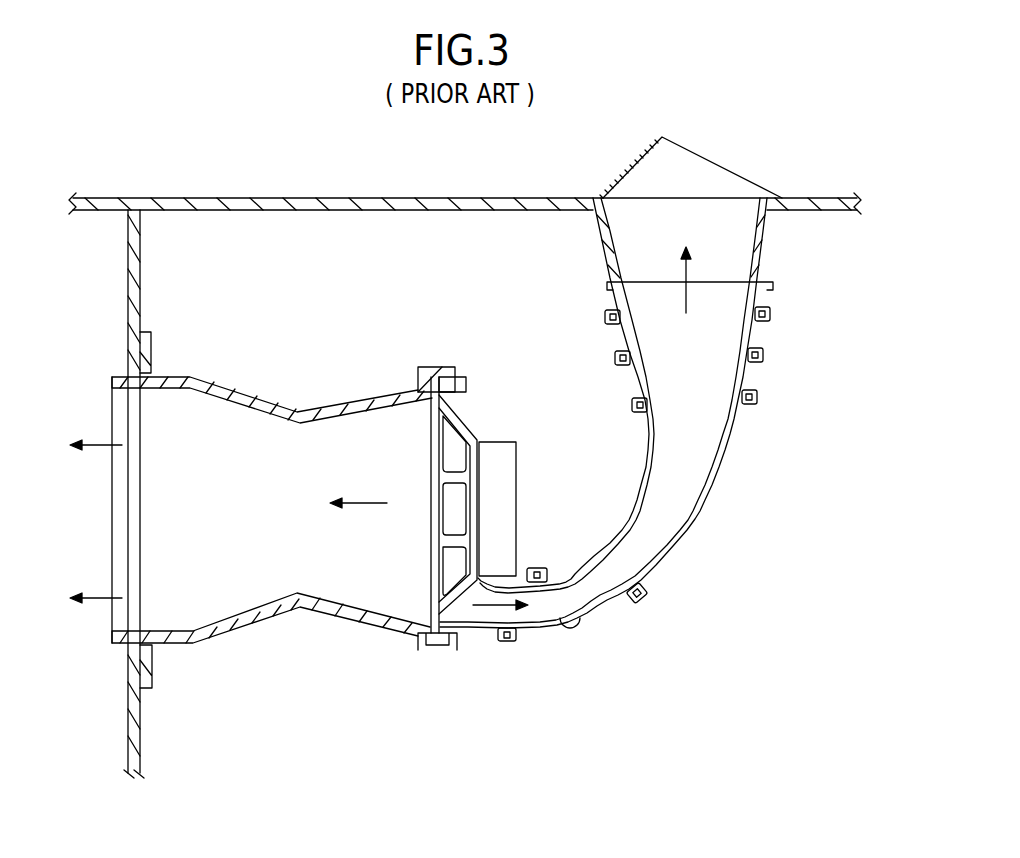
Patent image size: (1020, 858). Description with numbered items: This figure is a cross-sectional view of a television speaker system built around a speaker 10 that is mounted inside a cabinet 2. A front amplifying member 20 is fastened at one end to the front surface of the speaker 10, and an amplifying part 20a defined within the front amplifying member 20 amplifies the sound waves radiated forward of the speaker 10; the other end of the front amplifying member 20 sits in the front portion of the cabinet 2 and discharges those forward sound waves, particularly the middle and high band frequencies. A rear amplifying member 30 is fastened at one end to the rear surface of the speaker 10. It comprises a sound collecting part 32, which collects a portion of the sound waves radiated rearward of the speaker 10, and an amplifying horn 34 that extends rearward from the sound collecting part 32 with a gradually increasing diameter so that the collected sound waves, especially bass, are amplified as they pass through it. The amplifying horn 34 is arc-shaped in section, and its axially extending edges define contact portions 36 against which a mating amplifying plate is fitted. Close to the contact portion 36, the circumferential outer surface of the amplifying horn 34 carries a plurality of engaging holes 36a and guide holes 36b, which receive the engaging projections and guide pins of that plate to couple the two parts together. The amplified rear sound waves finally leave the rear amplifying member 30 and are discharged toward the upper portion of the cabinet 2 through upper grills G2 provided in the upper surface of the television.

The cabinet 2 is at (387, 200).
The front amplifying member 20 is at (230, 632).
The amplifying part 20a is at (250, 432).
The speaker 10 is at (462, 433).
The rear amplifying member 30 is at (736, 432).
The sound collecting part 32 is at (465, 612).
The amplifying horn 34 is at (725, 378).
The contact portion 36 is at (680, 530).
The engaging hole 36a is at (645, 590).
The guide hole 36b is at (572, 628).
The upper grill G2 is at (632, 163).